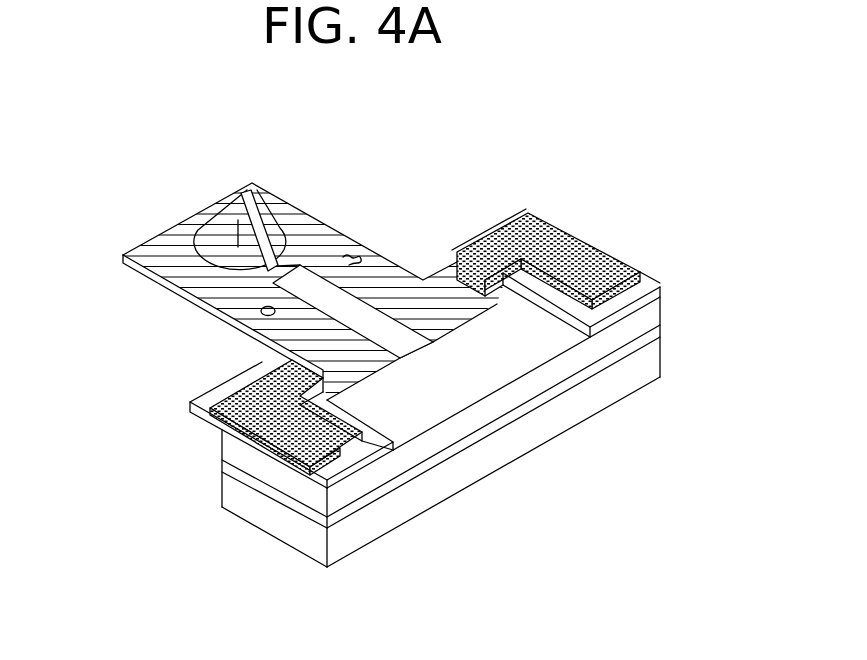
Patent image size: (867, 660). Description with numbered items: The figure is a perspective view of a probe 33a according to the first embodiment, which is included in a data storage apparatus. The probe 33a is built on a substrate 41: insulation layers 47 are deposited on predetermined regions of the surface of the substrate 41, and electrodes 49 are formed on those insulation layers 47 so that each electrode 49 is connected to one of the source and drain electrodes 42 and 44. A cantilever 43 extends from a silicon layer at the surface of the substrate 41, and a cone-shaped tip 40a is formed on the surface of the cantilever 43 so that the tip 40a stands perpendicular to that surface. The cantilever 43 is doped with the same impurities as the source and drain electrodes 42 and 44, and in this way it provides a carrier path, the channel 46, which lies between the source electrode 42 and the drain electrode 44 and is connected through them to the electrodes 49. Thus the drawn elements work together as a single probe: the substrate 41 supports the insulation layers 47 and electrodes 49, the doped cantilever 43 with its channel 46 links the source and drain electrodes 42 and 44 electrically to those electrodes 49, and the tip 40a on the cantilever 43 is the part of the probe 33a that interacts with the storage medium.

The probe 33a is at (163, 413).
The tip 40a is at (260, 197).
The substrate 41 is at (666, 292).
The source electrode 42 is at (327, 237).
The cantilever 43 is at (158, 293).
The drain electrode 44 is at (162, 245).
The channel 46 is at (247, 198).
The insulation layer 47 is at (343, 462).
The electrode 49 is at (293, 437).